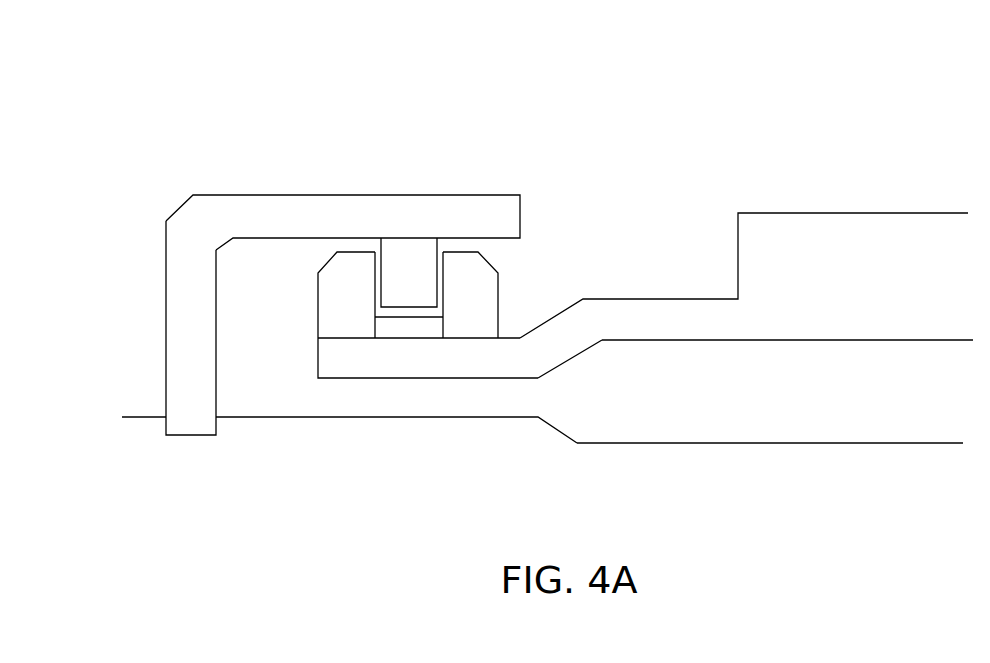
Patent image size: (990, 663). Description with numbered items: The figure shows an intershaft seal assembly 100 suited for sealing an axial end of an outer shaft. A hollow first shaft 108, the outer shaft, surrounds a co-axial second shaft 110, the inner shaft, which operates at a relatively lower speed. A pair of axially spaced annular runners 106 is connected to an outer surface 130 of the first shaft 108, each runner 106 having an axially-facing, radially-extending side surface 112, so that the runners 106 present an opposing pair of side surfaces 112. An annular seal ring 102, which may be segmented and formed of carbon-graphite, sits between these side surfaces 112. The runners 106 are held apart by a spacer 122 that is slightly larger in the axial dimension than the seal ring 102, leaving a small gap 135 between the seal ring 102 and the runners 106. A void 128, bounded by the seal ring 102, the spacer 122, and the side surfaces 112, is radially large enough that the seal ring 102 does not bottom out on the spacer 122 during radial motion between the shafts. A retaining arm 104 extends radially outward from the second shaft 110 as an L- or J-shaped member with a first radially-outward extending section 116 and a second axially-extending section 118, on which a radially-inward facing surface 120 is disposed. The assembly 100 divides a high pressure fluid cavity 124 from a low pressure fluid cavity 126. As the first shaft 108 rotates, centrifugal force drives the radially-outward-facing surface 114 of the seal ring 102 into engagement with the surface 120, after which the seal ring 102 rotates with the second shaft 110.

The intershaft seal assembly 100 is at (152, 92).
The annular seal ring 102 is at (392, 285).
The retaining arm 104 is at (177, 336).
The annular runners 106 is at (328, 288).
The first shaft 108 is at (840, 280).
The second shaft 110 is at (820, 474).
The side surface 112 is at (367, 278).
The radially-outward-facing surface 114 is at (420, 246).
The first radially-outward extending section 116 is at (185, 365).
The second axially-extending section 118 is at (253, 207).
The radially-inward facing surface 120 is at (393, 230).
The spacer 122 is at (392, 338).
The high pressure fluid cavity 124 is at (625, 248).
The low pressure fluid cavity 126 is at (677, 399).
The void 128 is at (432, 312).
The outer surface 130 is at (336, 350).
The gap 135 is at (452, 268).